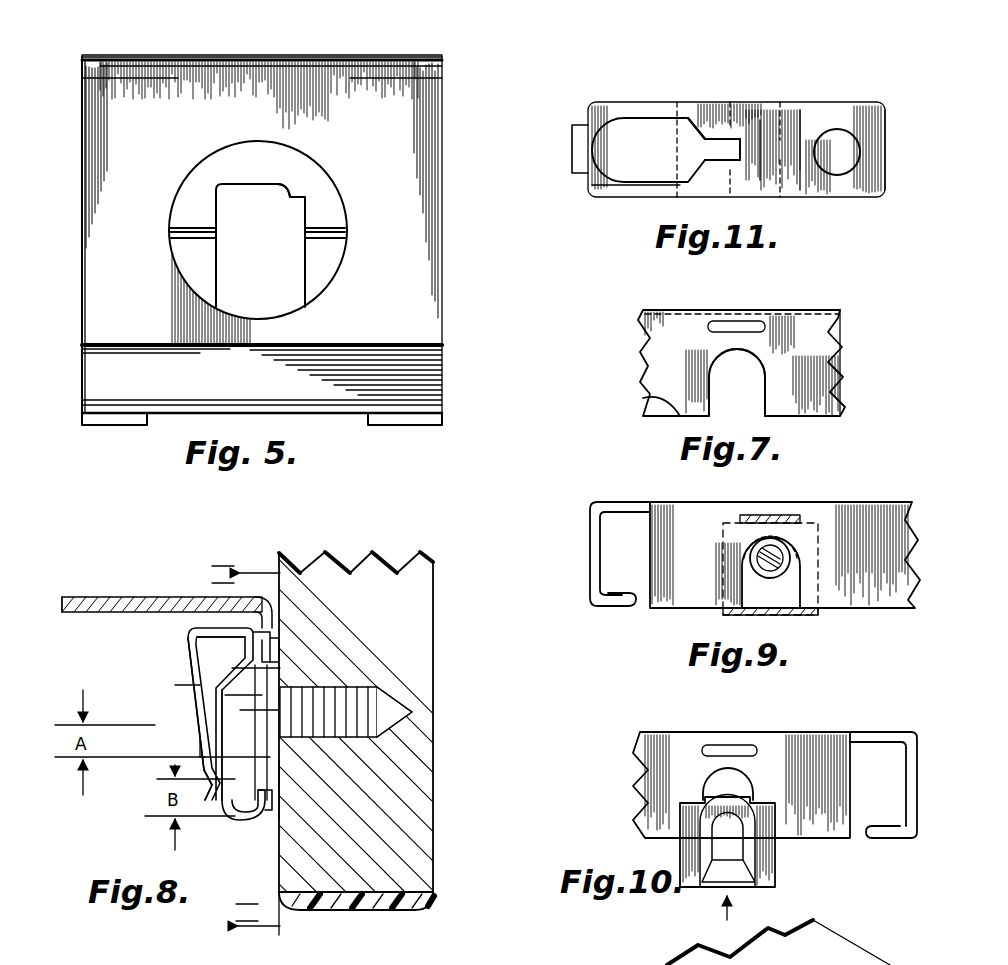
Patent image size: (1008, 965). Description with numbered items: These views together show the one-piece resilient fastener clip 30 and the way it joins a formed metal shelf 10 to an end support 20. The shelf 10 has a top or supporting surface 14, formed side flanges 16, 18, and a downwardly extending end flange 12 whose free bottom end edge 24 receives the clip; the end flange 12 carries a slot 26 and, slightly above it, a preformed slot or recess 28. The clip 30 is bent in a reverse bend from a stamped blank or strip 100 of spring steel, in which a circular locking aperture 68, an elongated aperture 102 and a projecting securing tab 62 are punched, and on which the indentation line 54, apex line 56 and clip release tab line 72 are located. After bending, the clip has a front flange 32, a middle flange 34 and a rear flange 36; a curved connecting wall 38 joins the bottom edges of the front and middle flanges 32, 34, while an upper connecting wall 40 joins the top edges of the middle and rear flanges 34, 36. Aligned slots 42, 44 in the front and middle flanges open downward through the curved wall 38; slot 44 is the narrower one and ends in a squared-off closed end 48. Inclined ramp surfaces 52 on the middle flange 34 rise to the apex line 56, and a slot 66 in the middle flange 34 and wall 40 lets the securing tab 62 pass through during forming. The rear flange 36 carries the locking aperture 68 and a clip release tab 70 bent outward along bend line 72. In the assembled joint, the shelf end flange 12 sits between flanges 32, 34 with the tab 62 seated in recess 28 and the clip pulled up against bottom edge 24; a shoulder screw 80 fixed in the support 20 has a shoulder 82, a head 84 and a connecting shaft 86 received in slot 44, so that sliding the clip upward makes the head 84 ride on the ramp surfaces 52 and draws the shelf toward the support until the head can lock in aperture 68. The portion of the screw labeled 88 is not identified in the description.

In FIG. 7, the metal shelf 10 is at (848, 328).
In FIG. 8, the metal shelf 10 is at (88, 596).
In FIG. 7, the end flange 12 is at (810, 359).
In FIG. 9, the end flange 12 is at (882, 557).
In FIG. 8, the end flange 12 is at (302, 618).
In FIG. 7, the top or supporting surface 14 is at (788, 316).
In FIG. 8, the top or supporting surface 14 is at (140, 597).
In FIG. 10, the side flange 16 is at (917, 790).
In FIG. 9, the side flange 18 is at (590, 560).
In FIG. 8, the end support 20 is at (420, 616).
In FIG. 7, the bottom end edge 24 is at (645, 400).
In FIG. 9, the bottom end edge 24 is at (840, 612).
In FIG. 10, the bottom end edge 24 is at (836, 840).
In FIG. 8, the bottom end edge 24 is at (252, 825).
In FIG. 7, the slot 26 is at (768, 378).
In FIG. 9, the slot 26 is at (745, 581).
In FIG. 10, the slot 26 is at (738, 781).
In FIG. 7, the slot or recess 28 is at (735, 325).
In FIG. 10, the slot or recess 28 is at (725, 748).
In FIG. 5, the fastener clip 30 is at (72, 80).
In FIG. 10, the fastener clip 30 is at (782, 868).
In FIG. 8, the fastener clip 30 is at (186, 630).
In FIG. 11, the front flange 32 is at (608, 196).
In FIG. 8, the front flange 32 is at (300, 648).
In FIG. 5, the middle flange 34 is at (250, 158).
In FIG. 11, the middle flange 34 is at (783, 192).
In FIG. 8, the middle flange 34 is at (250, 656).
In FIG. 5, the rear flange 36 is at (142, 147).
In FIG. 11, the rear flange 36 is at (822, 192).
In FIG. 8, the rear flange 36 is at (184, 648).
In FIG. 5, the curved connecting wall 38 is at (118, 422).
In FIG. 8, the curved connecting wall 38 is at (240, 832).
In FIG. 5, the connecting wall 40 is at (328, 62).
In FIG. 9, the slot 42 is at (805, 532).
In FIG. 5, the slot 44 is at (225, 246).
In FIG. 5, the closed end 48 is at (305, 202).
In FIG. 8, the inclined ramp surfaces 52 is at (284, 790).
In FIG. 11, the indentation line 54 is at (708, 103).
In FIG. 8, the indentation line 54 is at (283, 815).
In FIG. 5, the apex line 56 is at (180, 232).
In FIG. 11, the apex line 56 is at (756, 103).
In FIG. 8, the apex line 56 is at (215, 690).
In FIG. 11, the securing tab 62 is at (580, 124).
In FIG. 8, the securing tab 62 is at (272, 648).
In FIG. 8, the slot 66 is at (205, 600).
In FIG. 11, the locking aperture 68 is at (857, 152).
In FIG. 5, the clip release tab 70 is at (428, 368).
In FIG. 8, the clip release tab 70 is at (215, 810).
In FIG. 5, the bend line 72 is at (410, 345).
In FIG. 11, the bend line 72 is at (890, 137).
In FIG. 8, the shoulder screw 80 is at (402, 696).
In FIG. 8, the shoulder 82 is at (276, 676).
In FIG. 8, the head 84 is at (200, 752).
In FIG. 8, the shaft 86 is at (310, 772).
In FIG. 8, the tip 88 is at (392, 737).
In FIG. 11, the blank 100 is at (830, 88).
In FIG. 11, the elongated aperture 102 is at (633, 122).